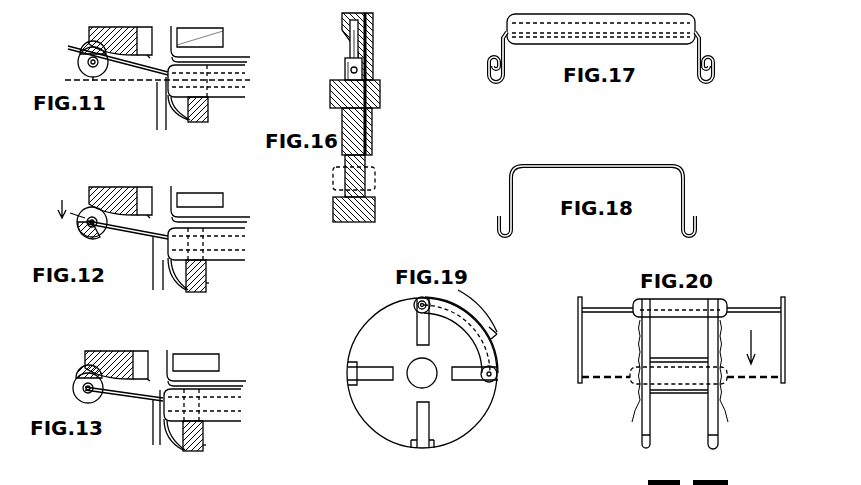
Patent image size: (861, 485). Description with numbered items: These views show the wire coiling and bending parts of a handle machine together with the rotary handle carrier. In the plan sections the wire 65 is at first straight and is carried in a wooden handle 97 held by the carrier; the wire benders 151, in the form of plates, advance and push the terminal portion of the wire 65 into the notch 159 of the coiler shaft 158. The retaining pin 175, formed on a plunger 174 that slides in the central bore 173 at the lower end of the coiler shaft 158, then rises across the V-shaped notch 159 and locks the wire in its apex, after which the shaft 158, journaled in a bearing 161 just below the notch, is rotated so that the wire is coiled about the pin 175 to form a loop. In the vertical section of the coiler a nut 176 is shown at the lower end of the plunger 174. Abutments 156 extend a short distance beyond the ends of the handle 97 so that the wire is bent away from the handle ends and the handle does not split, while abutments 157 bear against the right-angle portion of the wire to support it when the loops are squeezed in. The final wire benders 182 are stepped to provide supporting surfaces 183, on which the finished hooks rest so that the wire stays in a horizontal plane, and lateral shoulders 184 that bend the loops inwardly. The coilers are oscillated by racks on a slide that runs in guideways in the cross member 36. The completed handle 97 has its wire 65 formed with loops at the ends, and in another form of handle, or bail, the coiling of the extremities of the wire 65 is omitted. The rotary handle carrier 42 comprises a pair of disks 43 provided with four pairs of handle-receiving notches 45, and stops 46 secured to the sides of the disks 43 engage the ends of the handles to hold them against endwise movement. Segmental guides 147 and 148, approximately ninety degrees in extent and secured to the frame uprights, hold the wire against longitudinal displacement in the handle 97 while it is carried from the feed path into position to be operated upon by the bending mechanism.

In FIG. 11, the cross member 36 is at (242, 60).
In FIG. 12, the cross member 36 is at (225, 205).
In FIG. 13, the cross member 36 is at (222, 373).
In FIG. 20, the rotary handle-carrier 42 is at (679, 394).
In FIG. 12, the disks 43 is at (207, 285).
In FIG. 13, the disks 43 is at (204, 445).
In FIG. 19, the disks 43 is at (485, 418).
In FIG. 20, the disks 43 is at (651, 427).
In FIG. 19, the handle-receiving notches 45 is at (350, 373).
In FIG. 20, the handle-receiving notches 45 is at (612, 380).
In FIG. 11, the stops 46 is at (190, 120).
In FIG. 12, the stops 46 is at (180, 279).
In FIG. 13, the stops 46 is at (180, 440).
In FIG. 19, the stops 46 is at (429, 341).
In FIG. 20, the stops 46 is at (636, 438).
In FIG. 11, the wire 65 is at (68, 47).
In FIG. 12, the wire 65 is at (122, 230).
In FIG. 13, the wire 65 is at (115, 391).
In FIG. 16, the wire 65 is at (348, 64).
In FIG. 17, the wire 65 is at (700, 53).
In FIG. 18, the wire 65 is at (688, 192).
In FIG. 19, the wire 65 is at (413, 305).
In FIG. 20, the wire 65 is at (620, 306).
In FIG. 11, the roller rod 97 is at (238, 97).
In FIG. 12, the roller rod 97 is at (238, 260).
In FIG. 13, the roller rod 97 is at (243, 422).
In FIG. 17, the roller rod 97 is at (700, 31).
In FIG. 19, the roller rod 97 is at (415, 314).
In FIG. 20, the roller rod 97 is at (690, 316).
In FIG. 20, the guide 147 is at (782, 385).
In FIG. 19, the guide 148 is at (498, 352).
In FIG. 20, the guide 148 is at (582, 340).
In FIG. 11, the wire benders 151 is at (157, 108).
In FIG. 12, the wire benders 151 is at (153, 272).
In FIG. 13, the wire benders 151 is at (152, 432).
In FIG. 11, the abutments 156 is at (225, 37).
In FIG. 12, the abutments 156 is at (166, 233).
In FIG. 13, the abutments 156 is at (160, 397).
In FIG. 11, the abutments 157 is at (177, 30).
In FIG. 12, the abutments 157 is at (174, 193).
In FIG. 13, the abutments 157 is at (172, 357).
In FIG. 11, the coiler shaft 158 is at (91, 49).
In FIG. 12, the coiler shaft 158 is at (84, 235).
In FIG. 13, the coiler shaft 158 is at (82, 375).
In FIG. 16, the coiler shaft 158 is at (372, 50).
In FIG. 11, the notch 159 is at (78, 62).
In FIG. 12, the notch 159 is at (78, 222).
In FIG. 13, the notch 159 is at (77, 395).
In FIG. 16, the notch 159 is at (348, 42).
In FIG. 16, the bearing 161 is at (380, 100).
In FIG. 16, the central bore 173 is at (372, 128).
In FIG. 11, the plunger 174 is at (95, 78).
In FIG. 16, the plunger 174 is at (366, 160).
In FIG. 11, the retaining pin 175 is at (97, 68).
In FIG. 12, the retaining pin 175 is at (86, 212).
In FIG. 13, the retaining pin 175 is at (80, 386).
In FIG. 16, the retaining pin 175 is at (360, 78).
In FIG. 16, the nut 176 is at (376, 206).
In FIG. 11, the final wire benders 182 is at (118, 27).
In FIG. 12, the final wire benders 182 is at (118, 187).
In FIG. 13, the final wire benders 182 is at (100, 351).
In FIG. 11, the supporting surfaces 183 is at (148, 57).
In FIG. 12, the supporting surfaces 183 is at (150, 216).
In FIG. 13, the supporting surfaces 183 is at (150, 380).
In FIG. 11, the lateral shoulders 184 is at (143, 50).
In FIG. 12, the lateral shoulders 184 is at (141, 205).
In FIG. 13, the lateral shoulders 184 is at (137, 362).